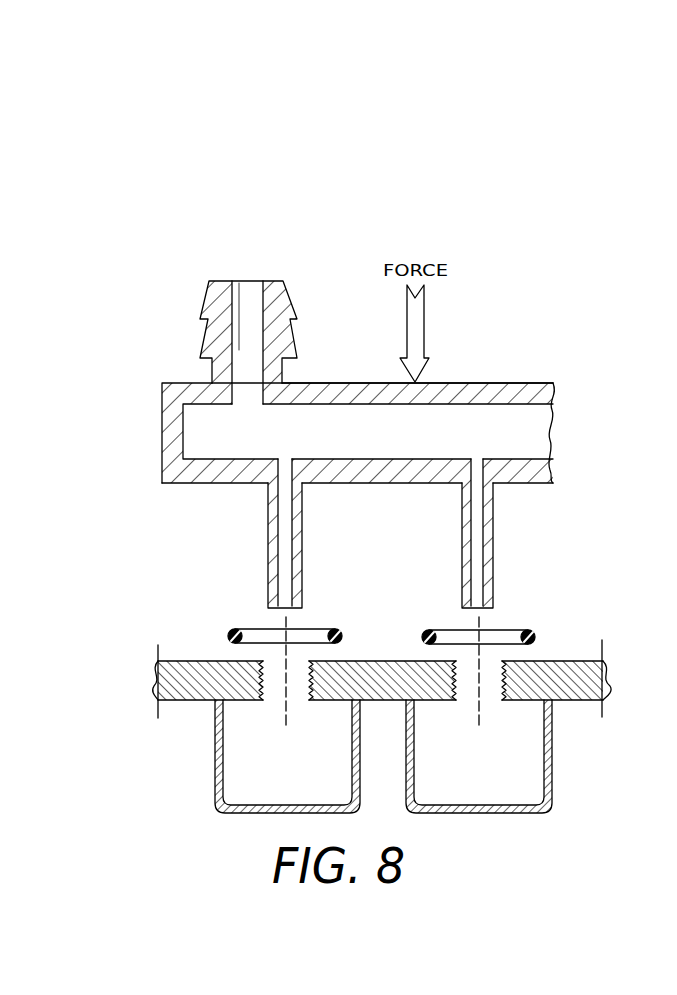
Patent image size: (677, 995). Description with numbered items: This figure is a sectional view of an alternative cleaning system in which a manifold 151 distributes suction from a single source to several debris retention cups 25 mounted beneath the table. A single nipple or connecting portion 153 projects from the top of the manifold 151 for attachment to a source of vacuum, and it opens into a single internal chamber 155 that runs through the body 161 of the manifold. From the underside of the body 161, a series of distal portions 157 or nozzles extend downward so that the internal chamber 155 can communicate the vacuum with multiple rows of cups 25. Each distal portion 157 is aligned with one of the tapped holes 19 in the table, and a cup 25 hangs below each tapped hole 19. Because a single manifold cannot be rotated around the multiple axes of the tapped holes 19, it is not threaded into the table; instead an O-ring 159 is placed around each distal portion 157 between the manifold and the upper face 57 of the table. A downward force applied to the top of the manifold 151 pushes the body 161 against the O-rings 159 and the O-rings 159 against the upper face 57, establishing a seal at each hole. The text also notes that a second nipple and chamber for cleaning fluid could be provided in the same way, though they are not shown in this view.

The manifold 151 is at (506, 347).
The nipple or connecting portion 153 is at (206, 290).
The internal chamber 155 is at (493, 432).
The distal portion or nozzle 157 is at (302, 527).
The O-ring 159 is at (338, 629).
The body of the manifold 161 is at (162, 432).
The upper face of the table 57 is at (573, 661).
The tapped hole 19 is at (278, 690).
The cup 25 is at (215, 755).